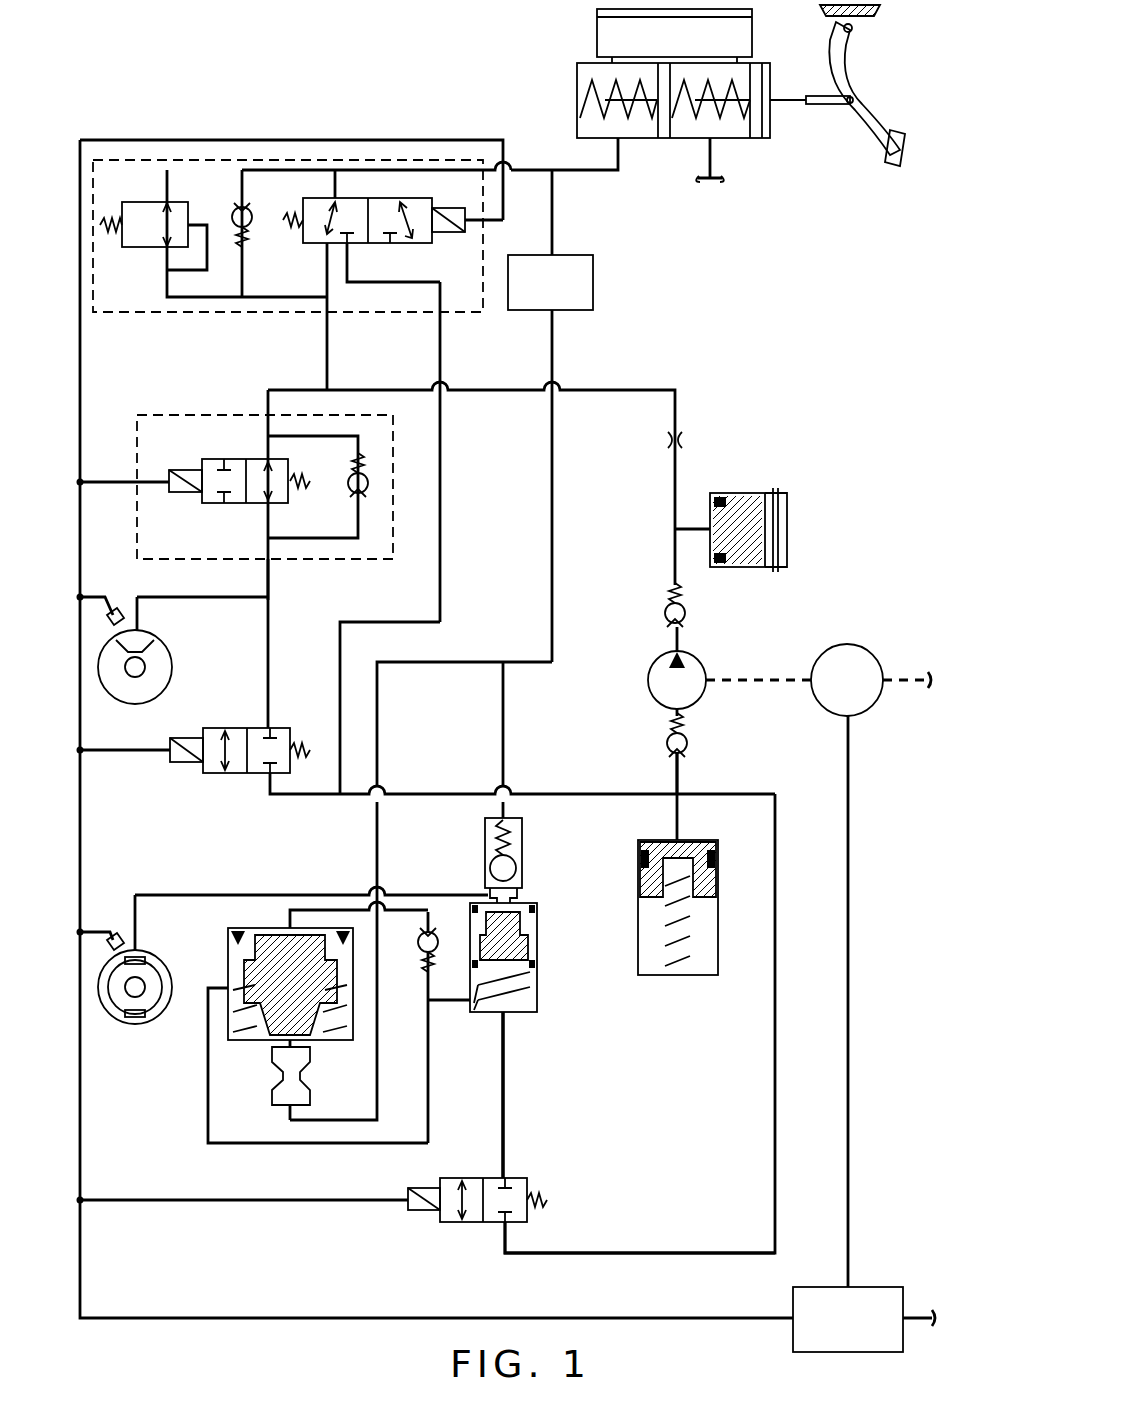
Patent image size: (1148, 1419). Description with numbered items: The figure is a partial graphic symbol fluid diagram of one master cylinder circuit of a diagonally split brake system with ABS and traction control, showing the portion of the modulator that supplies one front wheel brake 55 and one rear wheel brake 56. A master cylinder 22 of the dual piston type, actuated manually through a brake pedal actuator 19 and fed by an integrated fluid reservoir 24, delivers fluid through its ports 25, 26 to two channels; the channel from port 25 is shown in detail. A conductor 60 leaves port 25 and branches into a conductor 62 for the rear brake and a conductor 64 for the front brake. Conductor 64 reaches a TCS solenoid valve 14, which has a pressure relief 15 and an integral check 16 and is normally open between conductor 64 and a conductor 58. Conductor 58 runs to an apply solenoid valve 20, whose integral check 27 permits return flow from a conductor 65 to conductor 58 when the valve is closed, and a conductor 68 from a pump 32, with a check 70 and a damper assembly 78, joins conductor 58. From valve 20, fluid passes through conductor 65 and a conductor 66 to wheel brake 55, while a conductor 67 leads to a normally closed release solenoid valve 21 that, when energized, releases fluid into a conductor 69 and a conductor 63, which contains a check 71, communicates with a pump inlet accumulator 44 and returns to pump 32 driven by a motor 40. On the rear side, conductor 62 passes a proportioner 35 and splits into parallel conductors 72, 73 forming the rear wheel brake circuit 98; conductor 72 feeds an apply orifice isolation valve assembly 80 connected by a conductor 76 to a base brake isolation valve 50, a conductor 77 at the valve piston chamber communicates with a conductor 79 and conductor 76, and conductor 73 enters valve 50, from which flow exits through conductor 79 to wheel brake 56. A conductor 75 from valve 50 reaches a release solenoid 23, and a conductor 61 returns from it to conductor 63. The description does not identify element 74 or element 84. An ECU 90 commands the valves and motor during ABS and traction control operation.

The TCS solenoid valve 14 is at (203, 155).
The pressure relief 15 is at (142, 200).
The integral check 16 is at (248, 205).
The brake pedal actuator 19 is at (905, 152).
The apply solenoid valve 20 is at (193, 412).
The release solenoid valve 21 is at (240, 725).
The master cylinder 22 is at (570, 72).
The release solenoid 23 is at (473, 1225).
The fluid reservoir 24 is at (600, 28).
The port 25 is at (620, 150).
The port 26 is at (715, 152).
The integral check 27 is at (364, 492).
The pump 32 is at (697, 667).
The proportioner 35 is at (585, 283).
The motor 40 is at (835, 650).
The pump inlet accumulator 44 is at (705, 977).
The base brake isolation valve 50 is at (540, 948).
The wheel brake 55 is at (145, 633).
The wheel brake 56 is at (160, 963).
The conductor 58 is at (330, 338).
The conductor 60 is at (562, 173).
The conductor 61 is at (620, 1252).
The conductor 62 is at (553, 232).
The conductor 63 is at (680, 778).
The conductor 64 is at (522, 165).
The conductor 65 is at (272, 572).
The conductor 66 is at (160, 595).
The conductor 67 is at (272, 672).
The conductor 68 is at (583, 388).
The conductor 69 is at (280, 797).
The check 70 is at (664, 608).
The check 71 is at (666, 745).
The conductor 72 is at (385, 835).
The conductor 73 is at (503, 748).
The line 74 is at (432, 997).
The conductor 75 is at (508, 1125).
The conductor 76 is at (232, 1148).
The conductor 77 is at (288, 922).
The damper assembly 78 is at (752, 490).
The conductor 79 is at (333, 893).
The apply orifice isolation valve assembly 80 is at (345, 1043).
The check valve 84 is at (430, 954).
The ECU 90 is at (873, 1292).
The rear wheel brake circuit 98 is at (525, 1058).